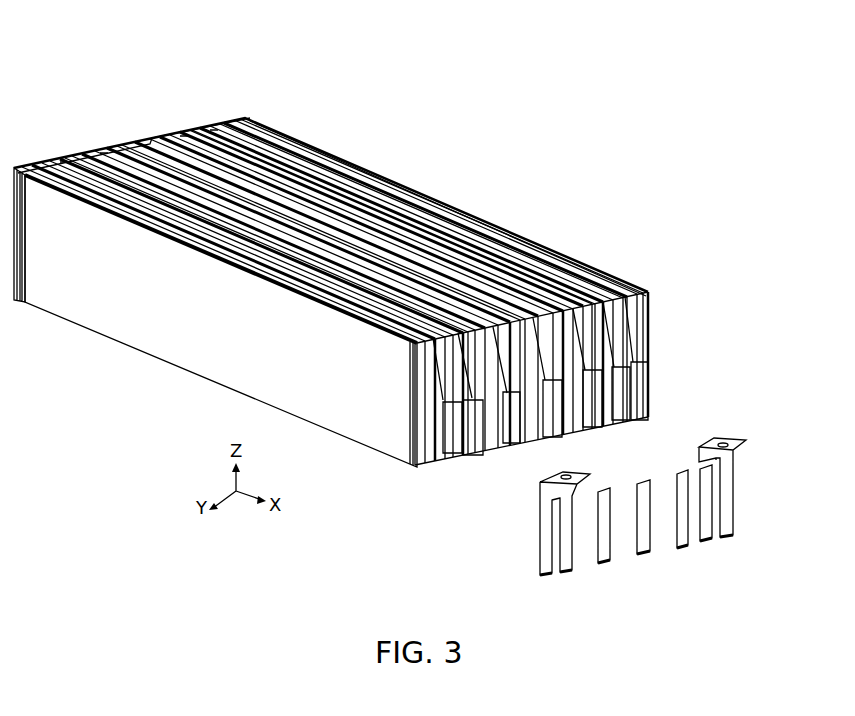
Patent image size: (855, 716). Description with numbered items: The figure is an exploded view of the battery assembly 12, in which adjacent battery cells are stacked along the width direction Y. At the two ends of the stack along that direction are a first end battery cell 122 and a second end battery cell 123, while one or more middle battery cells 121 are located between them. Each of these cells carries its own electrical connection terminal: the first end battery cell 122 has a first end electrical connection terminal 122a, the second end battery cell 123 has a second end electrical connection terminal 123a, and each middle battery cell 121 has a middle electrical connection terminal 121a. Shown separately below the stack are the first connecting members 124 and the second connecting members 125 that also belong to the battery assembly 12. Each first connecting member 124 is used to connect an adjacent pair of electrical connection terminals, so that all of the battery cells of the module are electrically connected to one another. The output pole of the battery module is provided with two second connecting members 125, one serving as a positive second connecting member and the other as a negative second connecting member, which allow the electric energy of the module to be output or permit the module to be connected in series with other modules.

The battery assembly 12 is at (93, 90).
The middle battery cell 121 is at (481, 247).
The middle electrical connection terminal 121a is at (508, 452).
The first end battery cell 122 is at (123, 337).
The first end electrical connection terminal 122a is at (437, 466).
The second end battery cell 123 is at (356, 170).
The second end electrical connection terminal 123a is at (646, 393).
The first connecting member 124 is at (650, 553).
The second connecting member 125 is at (730, 512).